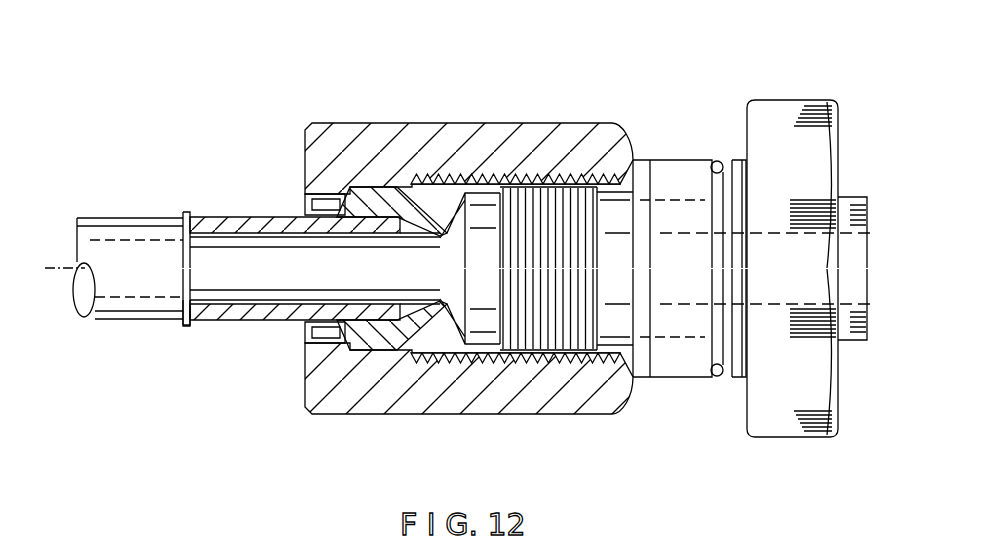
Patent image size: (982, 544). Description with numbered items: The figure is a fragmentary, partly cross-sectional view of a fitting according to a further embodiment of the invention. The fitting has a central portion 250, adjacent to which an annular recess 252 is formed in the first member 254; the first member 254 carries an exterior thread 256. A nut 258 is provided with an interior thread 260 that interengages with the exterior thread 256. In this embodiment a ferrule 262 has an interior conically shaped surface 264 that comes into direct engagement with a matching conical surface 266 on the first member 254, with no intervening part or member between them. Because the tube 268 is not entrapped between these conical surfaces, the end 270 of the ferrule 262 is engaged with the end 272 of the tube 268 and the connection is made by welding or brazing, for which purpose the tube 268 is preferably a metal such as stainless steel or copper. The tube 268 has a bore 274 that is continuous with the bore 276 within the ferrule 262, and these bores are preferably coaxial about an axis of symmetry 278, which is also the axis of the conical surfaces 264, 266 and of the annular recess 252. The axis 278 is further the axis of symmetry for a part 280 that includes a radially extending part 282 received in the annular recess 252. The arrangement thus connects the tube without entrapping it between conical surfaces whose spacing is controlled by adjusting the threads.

The central portion 250 is at (797, 405).
The annular recess 252 is at (716, 378).
The first member 254 is at (626, 352).
The exterior thread 256 is at (545, 172).
The nut 258 is at (430, 126).
The interior thread 260 is at (456, 182).
The ferrule 262 is at (370, 196).
The interior conically shaped surface 264 is at (415, 186).
The conical surface 266 is at (440, 262).
The tube 268 is at (180, 328).
The end of ferrule 270 is at (192, 217).
The end of tube 272 is at (185, 214).
The bore 274 is at (84, 302).
The bore 276 is at (292, 240).
The axis of symmetry 278 is at (133, 330).
The part 280 is at (680, 158).
The radially extending part 282 is at (727, 158).